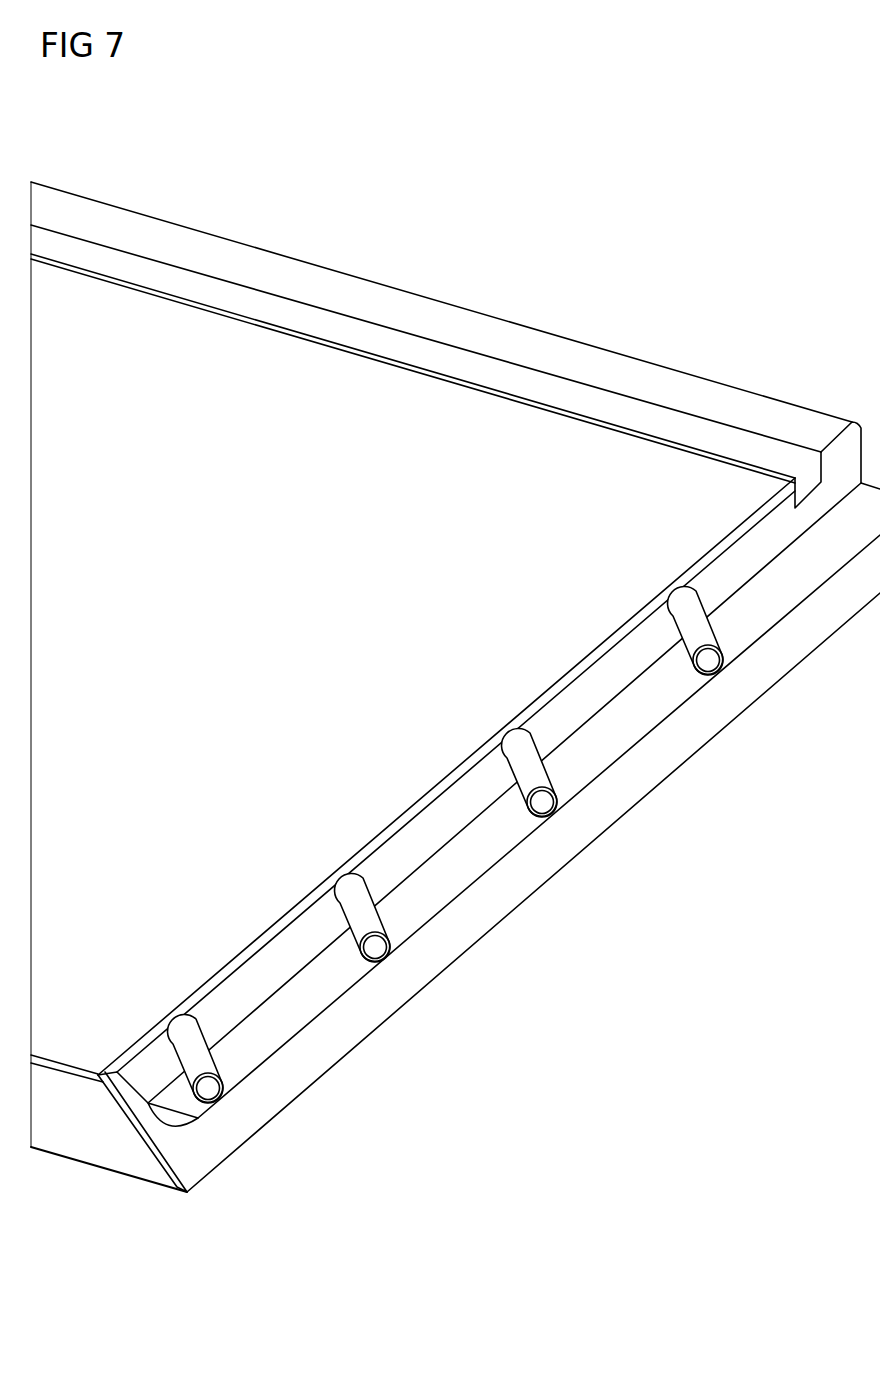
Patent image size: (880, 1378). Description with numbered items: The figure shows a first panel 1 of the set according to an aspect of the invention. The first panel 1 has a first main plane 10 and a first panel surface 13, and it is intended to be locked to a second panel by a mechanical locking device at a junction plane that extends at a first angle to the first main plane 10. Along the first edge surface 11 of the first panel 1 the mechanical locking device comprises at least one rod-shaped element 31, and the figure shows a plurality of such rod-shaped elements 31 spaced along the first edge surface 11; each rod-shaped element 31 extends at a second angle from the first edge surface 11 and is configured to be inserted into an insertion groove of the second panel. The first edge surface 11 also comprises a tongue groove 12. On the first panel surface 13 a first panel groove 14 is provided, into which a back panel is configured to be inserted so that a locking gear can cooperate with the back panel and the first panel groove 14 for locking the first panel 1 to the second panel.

The first panel 1 is at (549, 328).
The first main plane 10 is at (87, 323).
The first edge surface 11 is at (203, 1150).
The tongue groove 12 is at (420, 865).
The first panel surface 13 is at (182, 350).
The first panel groove 14 is at (683, 425).
The rod-shaped element 31 is at (525, 772).